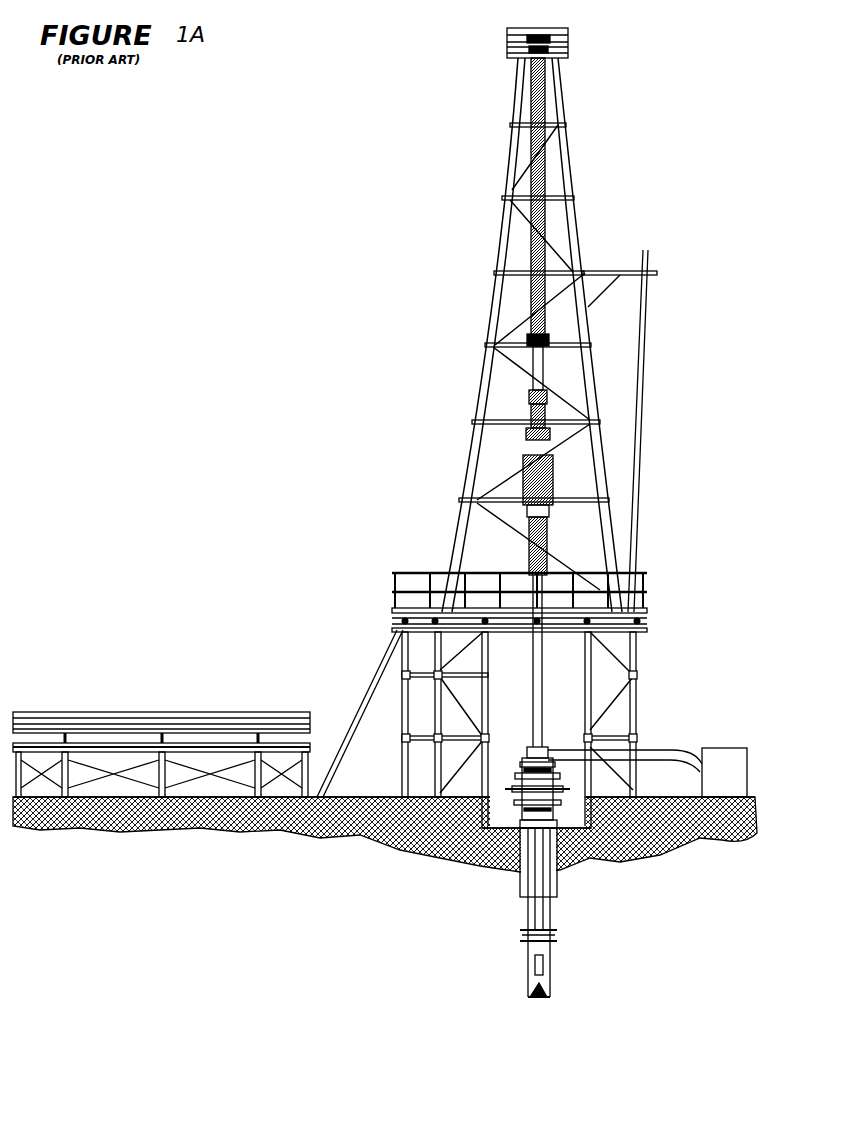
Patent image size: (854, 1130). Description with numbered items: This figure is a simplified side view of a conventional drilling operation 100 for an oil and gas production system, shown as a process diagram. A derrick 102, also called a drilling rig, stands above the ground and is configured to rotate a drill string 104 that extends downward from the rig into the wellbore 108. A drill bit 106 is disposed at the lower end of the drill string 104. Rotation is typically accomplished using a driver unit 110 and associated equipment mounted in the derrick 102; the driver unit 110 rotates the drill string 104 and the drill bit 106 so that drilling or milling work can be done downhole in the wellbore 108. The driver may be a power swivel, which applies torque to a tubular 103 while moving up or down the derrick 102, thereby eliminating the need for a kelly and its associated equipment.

The drilling operation 100 is at (385, 533).
The derrick 102 is at (479, 394).
The tubular 103 is at (541, 693).
The drill string 104 is at (549, 906).
The drill bit 106 is at (552, 992).
The wellbore 108 is at (527, 913).
The driver unit 110 is at (573, 467).